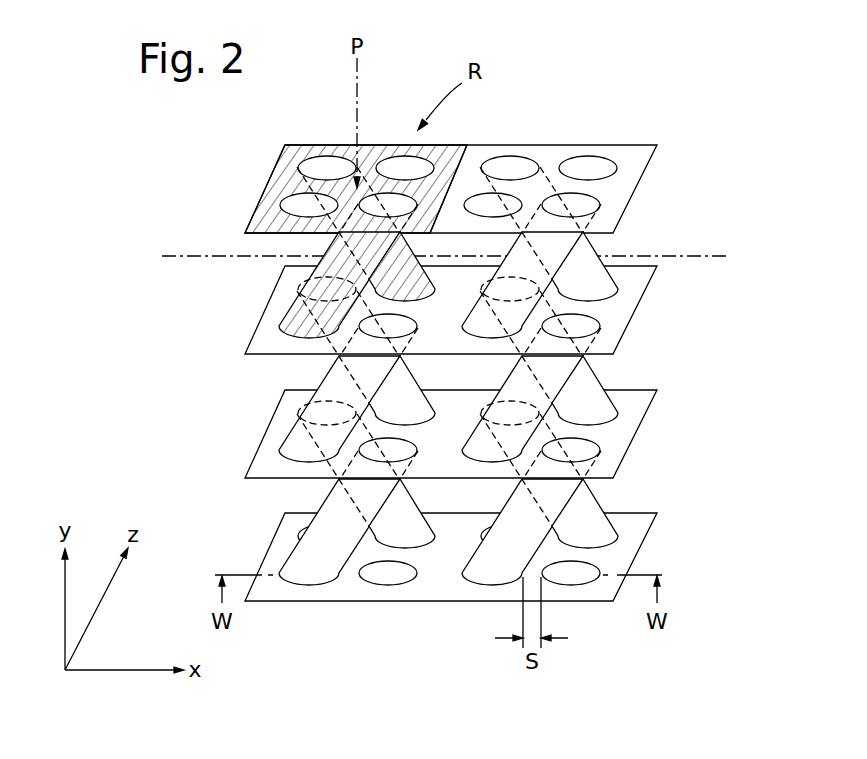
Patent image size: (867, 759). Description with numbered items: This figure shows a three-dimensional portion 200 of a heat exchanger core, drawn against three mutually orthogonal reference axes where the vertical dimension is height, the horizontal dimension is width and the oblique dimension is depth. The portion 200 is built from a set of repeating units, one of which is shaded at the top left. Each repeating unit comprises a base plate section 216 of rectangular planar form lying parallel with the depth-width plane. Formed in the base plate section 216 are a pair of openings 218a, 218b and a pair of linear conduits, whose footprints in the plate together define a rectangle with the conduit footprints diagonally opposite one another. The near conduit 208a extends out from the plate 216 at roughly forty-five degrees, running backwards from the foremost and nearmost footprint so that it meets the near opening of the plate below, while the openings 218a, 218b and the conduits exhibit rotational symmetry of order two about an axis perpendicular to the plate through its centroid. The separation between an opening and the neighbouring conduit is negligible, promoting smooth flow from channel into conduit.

The three-dimensional portion of a heat exchanger core 200 is at (706, 139).
The base plate section 216 is at (406, 155).
The opening 218a is at (290, 202).
The opening 218b is at (397, 166).
The near conduit 208a is at (388, 271).